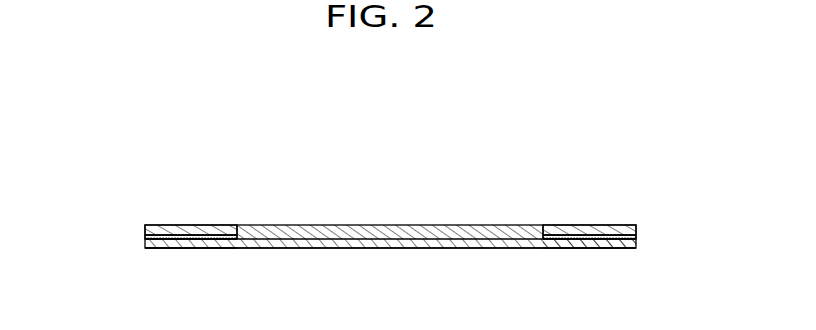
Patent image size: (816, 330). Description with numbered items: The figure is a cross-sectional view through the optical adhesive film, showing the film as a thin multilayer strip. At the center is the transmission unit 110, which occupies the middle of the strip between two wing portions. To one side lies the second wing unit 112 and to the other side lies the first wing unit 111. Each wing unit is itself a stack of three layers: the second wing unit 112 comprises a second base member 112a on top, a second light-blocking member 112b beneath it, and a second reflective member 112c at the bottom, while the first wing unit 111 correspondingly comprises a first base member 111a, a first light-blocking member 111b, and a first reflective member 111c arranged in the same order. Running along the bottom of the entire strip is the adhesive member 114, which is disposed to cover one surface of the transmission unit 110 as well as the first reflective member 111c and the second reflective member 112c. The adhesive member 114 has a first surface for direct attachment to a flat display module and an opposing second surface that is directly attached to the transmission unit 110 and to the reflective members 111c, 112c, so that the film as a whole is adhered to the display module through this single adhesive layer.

The transmission unit 110 is at (434, 226).
The first wing unit 111 is at (579, 224).
The first base member 111a is at (637, 228).
The first light-blocking member 111b is at (637, 237).
The first reflective member 111c is at (637, 242).
The second wing unit 112 is at (190, 224).
The second base member 112a is at (145, 229).
The second light-blocking member 112b is at (145, 236).
The second reflective member 112c is at (145, 242).
The adhesive member 114 is at (190, 250).